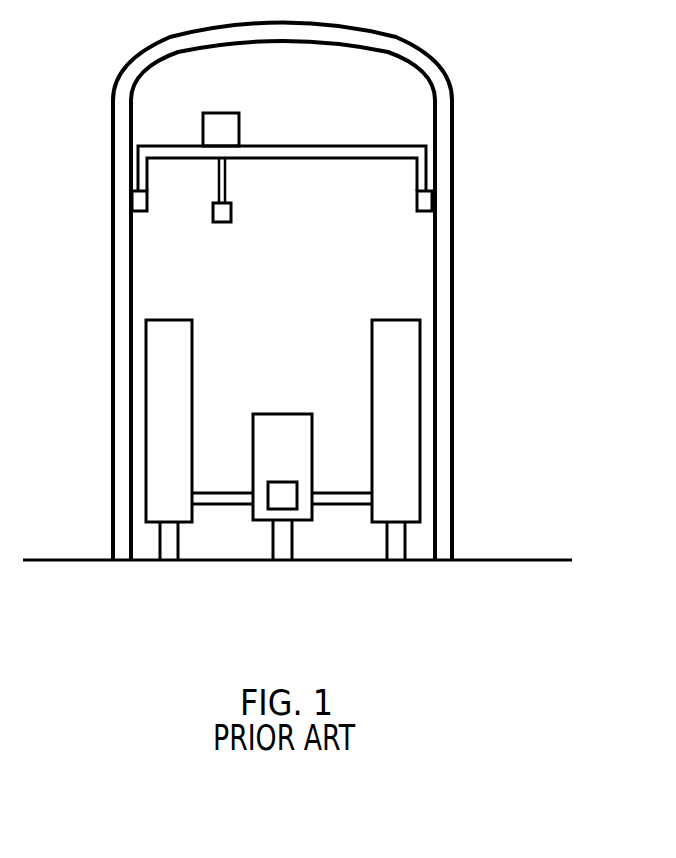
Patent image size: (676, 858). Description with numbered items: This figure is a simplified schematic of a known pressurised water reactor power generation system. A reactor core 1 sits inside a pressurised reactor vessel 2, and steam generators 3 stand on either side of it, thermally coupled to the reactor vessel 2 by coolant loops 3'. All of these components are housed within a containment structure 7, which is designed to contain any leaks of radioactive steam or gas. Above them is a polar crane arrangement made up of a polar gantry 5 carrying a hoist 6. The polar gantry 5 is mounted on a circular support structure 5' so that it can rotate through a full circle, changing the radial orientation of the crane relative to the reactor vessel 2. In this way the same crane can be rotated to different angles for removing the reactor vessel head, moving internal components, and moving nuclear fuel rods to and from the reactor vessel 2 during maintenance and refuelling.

The reactor core 1 is at (277, 498).
The pressurised reactor vessel 2 is at (259, 471).
The steam generators 3 is at (283, 440).
The coolant loops 3' is at (287, 560).
The polar gantry 5 is at (282, 138).
The circular support structure 5' is at (333, 190).
The hoist 6 is at (226, 113).
The containment structure 7 is at (110, 192).